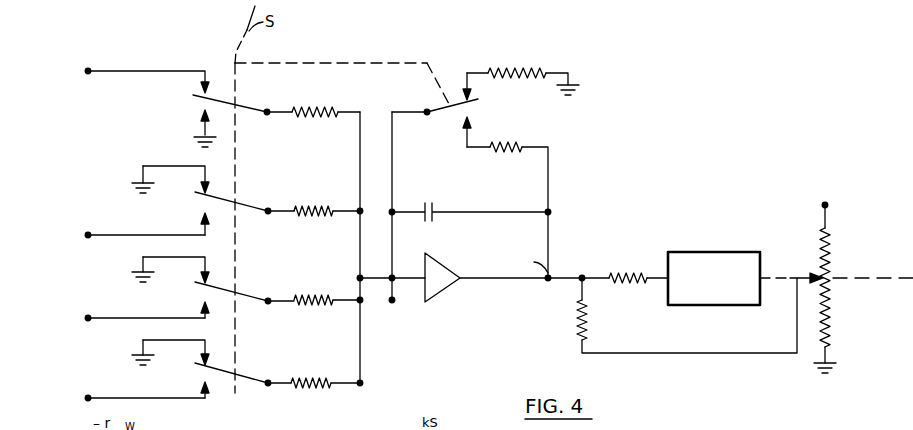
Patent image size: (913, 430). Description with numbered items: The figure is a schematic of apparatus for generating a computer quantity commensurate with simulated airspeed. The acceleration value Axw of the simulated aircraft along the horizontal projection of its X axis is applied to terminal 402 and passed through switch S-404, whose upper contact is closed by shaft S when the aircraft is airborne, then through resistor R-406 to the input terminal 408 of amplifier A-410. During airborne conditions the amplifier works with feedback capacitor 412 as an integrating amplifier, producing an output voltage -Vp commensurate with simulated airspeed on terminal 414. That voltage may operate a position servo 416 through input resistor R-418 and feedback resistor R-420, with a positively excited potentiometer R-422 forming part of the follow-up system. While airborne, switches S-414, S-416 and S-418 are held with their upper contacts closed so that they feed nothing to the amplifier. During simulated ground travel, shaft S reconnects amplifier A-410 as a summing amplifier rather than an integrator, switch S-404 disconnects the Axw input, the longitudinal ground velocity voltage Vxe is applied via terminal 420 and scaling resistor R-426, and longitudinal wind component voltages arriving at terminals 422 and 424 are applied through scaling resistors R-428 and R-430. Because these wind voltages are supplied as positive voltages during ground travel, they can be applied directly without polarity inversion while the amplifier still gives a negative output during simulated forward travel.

The terminal 402 is at (88, 71).
The switch S- 404 is at (202, 103).
The resistor R- 406 is at (294, 108).
The input terminal 408 is at (397, 283).
The amplifier A- 410 is at (429, 300).
The feedback capacitor 412 is at (436, 219).
The terminal 414 is at (203, 205).
The position servo 416 is at (205, 292).
The input resistor R- 418 is at (205, 372).
The terminal 420 is at (88, 235).
The terminal 422 is at (88, 318).
The terminal 424 is at (88, 398).
The scaling resistor R- 426 is at (297, 208).
The scaling resistor R- 428 is at (297, 298).
The scaling resistor R- 430 is at (293, 381).